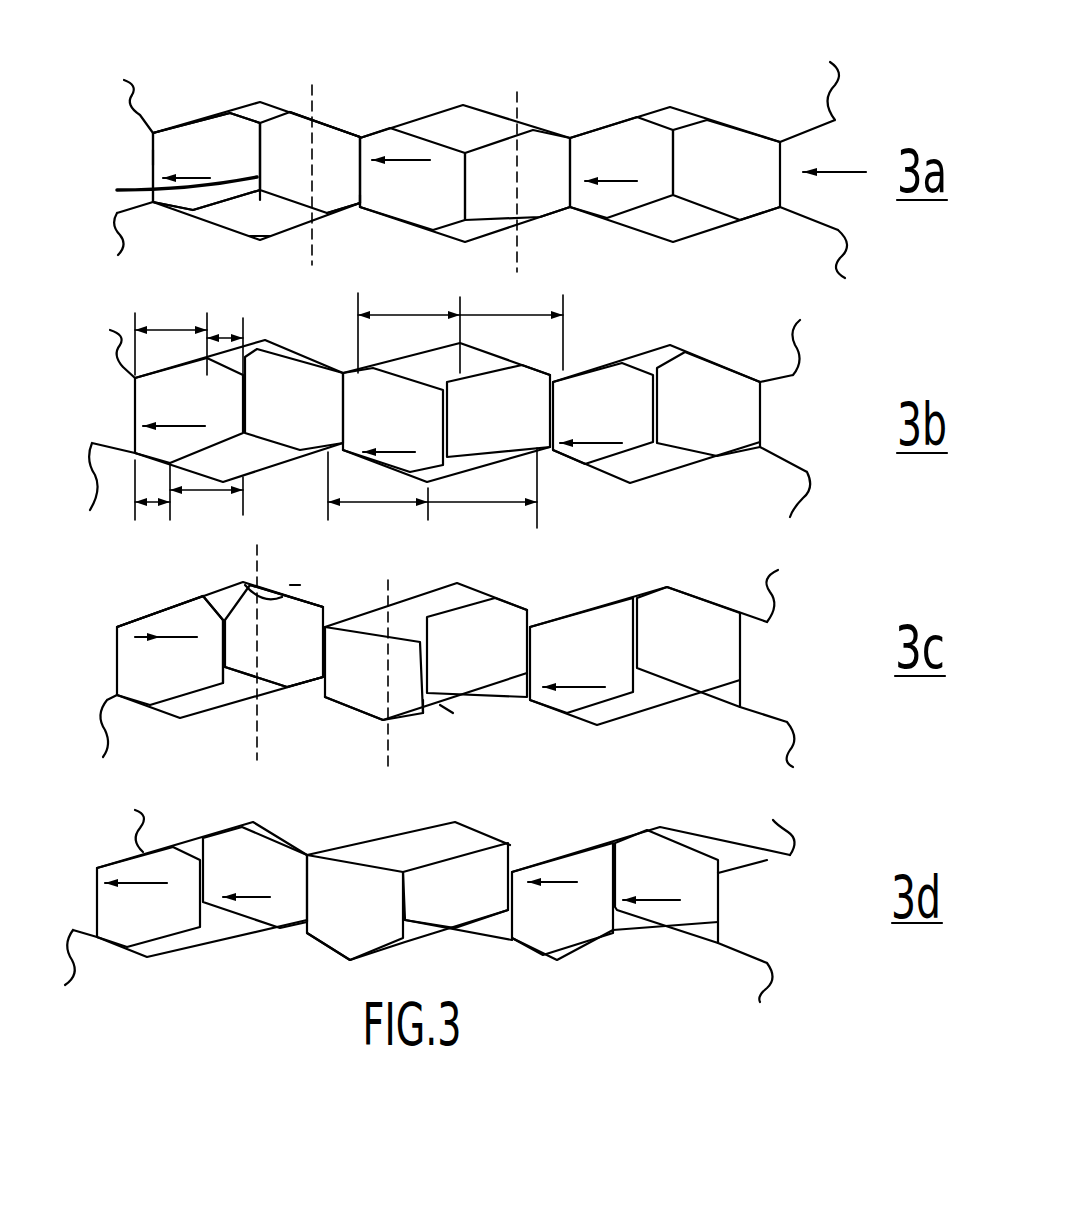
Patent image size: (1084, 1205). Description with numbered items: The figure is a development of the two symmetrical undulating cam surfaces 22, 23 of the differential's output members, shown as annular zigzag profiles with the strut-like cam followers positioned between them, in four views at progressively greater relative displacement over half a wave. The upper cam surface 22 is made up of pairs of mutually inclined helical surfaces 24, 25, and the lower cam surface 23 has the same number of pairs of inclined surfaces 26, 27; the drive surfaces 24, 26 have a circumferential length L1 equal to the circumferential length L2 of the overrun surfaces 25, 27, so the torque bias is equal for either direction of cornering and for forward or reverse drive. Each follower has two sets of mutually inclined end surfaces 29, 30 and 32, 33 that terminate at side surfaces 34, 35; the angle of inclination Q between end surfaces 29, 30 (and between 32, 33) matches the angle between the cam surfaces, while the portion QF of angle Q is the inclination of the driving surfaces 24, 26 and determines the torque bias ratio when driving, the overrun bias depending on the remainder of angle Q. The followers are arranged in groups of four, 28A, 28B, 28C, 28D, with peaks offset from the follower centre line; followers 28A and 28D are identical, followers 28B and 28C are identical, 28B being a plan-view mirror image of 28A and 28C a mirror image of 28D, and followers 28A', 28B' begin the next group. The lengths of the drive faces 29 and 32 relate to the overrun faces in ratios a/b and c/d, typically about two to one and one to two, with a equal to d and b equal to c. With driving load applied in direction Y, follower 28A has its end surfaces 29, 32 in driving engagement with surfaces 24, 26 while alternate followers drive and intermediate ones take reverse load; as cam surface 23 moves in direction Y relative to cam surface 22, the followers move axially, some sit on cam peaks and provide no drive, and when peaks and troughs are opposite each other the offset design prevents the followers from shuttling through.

The cam surface 22 is at (482, 75).
The cam surface 23 is at (589, 280).
The drive surface 24 is at (220, 118).
The overrun surface 25 is at (333, 133).
The drive surface 26 is at (227, 203).
The overrun surface 27 is at (263, 243).
The end surface 29 is at (285, 120).
The end surface 30 is at (245, 118).
The end surface 32 is at (177, 208).
The end surface 33 is at (223, 197).
The side surface 34 is at (158, 155).
The side surface 35 is at (169, 193).
The cam follower 28A is at (178, 530).
The cam follower 28B is at (281, 520).
The cam follower 28C is at (386, 544).
The cam follower 28D is at (486, 535).
The cam follower 28A' is at (592, 536).
The cam follower 28B' is at (697, 531).
The direction of drive load Y is at (834, 153).
The angle of inclination Q is at (393, 705).
The portion of angle Q QF is at (225, 617).
The length of drive face a is at (171, 331).
The length of overrun face b is at (225, 330).
The length of drive face c is at (148, 495).
The length of overrun face d is at (207, 495).
The circumferential length of drive surfaces L1 is at (394, 409).
The circumferential length of overrun surfaces L2 is at (495, 411).